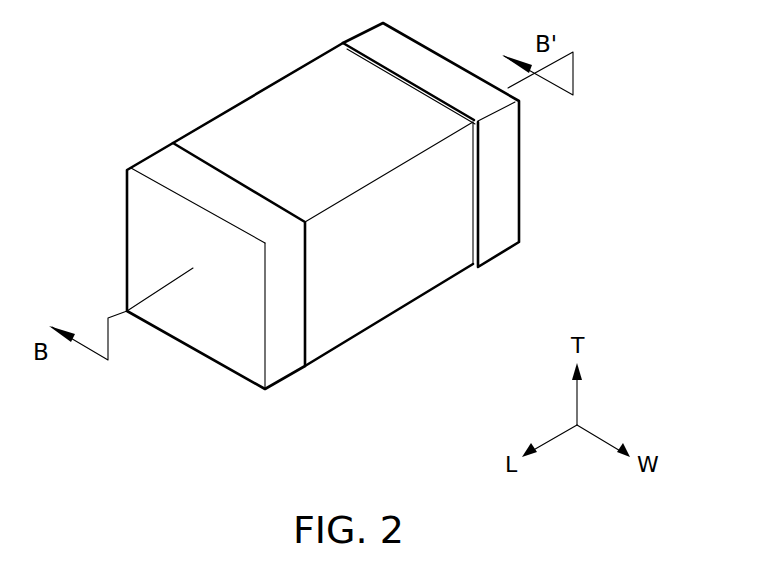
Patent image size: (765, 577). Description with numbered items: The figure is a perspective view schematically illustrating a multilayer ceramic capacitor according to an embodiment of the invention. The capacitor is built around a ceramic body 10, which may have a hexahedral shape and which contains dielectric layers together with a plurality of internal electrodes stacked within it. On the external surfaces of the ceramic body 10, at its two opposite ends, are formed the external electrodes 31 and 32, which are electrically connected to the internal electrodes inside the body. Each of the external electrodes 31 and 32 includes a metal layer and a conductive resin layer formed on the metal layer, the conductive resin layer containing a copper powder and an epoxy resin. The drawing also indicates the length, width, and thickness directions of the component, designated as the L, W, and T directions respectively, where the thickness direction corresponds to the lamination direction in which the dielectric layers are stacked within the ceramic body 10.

The ceramic body 10 is at (268, 110).
The external electrode 31 is at (283, 370).
The external electrode 32 is at (511, 212).